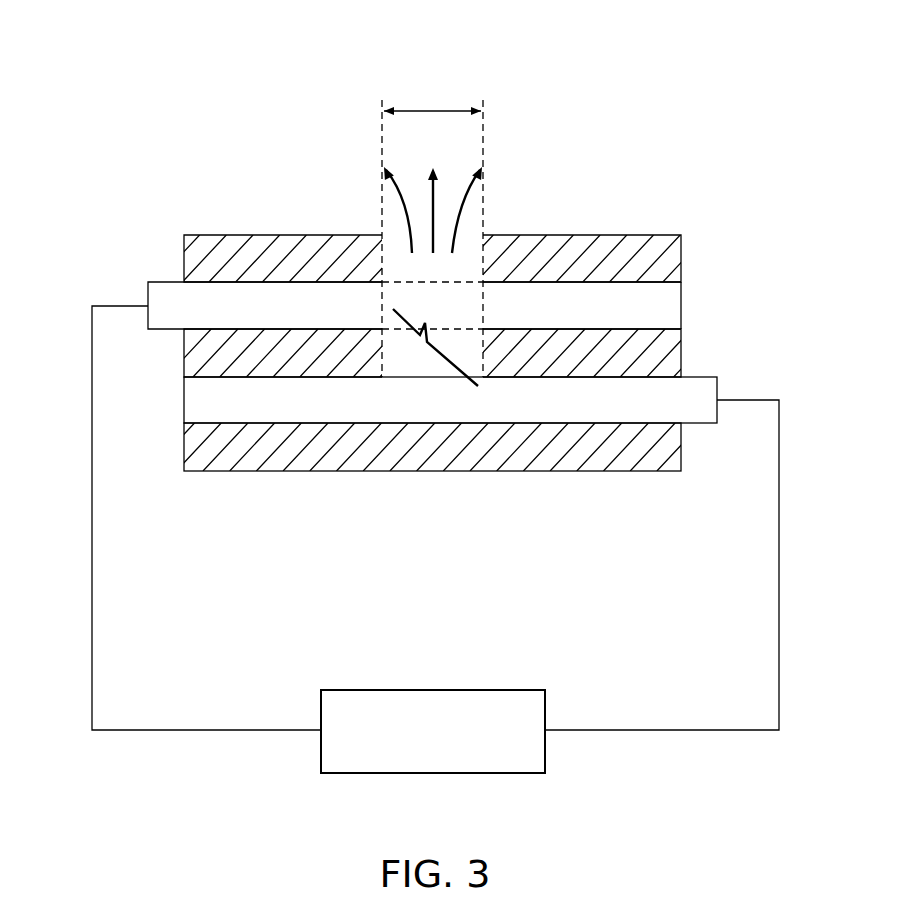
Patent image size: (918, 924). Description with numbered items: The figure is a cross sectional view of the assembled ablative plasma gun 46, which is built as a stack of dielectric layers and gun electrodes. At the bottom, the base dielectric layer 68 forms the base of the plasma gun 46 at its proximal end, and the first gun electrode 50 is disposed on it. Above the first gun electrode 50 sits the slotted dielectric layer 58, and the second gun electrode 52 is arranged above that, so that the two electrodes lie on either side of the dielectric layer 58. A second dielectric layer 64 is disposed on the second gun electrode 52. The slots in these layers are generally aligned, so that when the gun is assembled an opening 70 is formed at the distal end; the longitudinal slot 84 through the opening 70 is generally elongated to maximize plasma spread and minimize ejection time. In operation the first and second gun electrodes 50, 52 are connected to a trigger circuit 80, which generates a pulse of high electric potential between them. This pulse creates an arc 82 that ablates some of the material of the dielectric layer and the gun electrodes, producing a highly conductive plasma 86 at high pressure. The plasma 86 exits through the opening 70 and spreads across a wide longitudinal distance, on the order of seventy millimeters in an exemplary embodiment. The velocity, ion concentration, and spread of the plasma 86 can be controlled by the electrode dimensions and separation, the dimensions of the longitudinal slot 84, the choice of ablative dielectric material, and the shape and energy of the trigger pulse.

The ablative plasma gun 46 is at (735, 55).
The first gun electrode 50 is at (190, 402).
The second gun electrode 52 is at (681, 307).
The slotted dielectric layer 58 is at (681, 357).
The second dielectric layer 64 is at (681, 257).
The base dielectric layer 68 is at (681, 450).
The opening 70 is at (465, 253).
The trigger circuit 80 is at (445, 690).
The arc 82 is at (404, 312).
The longitudinal slot 84 is at (432, 111).
The plasma 86 is at (435, 197).